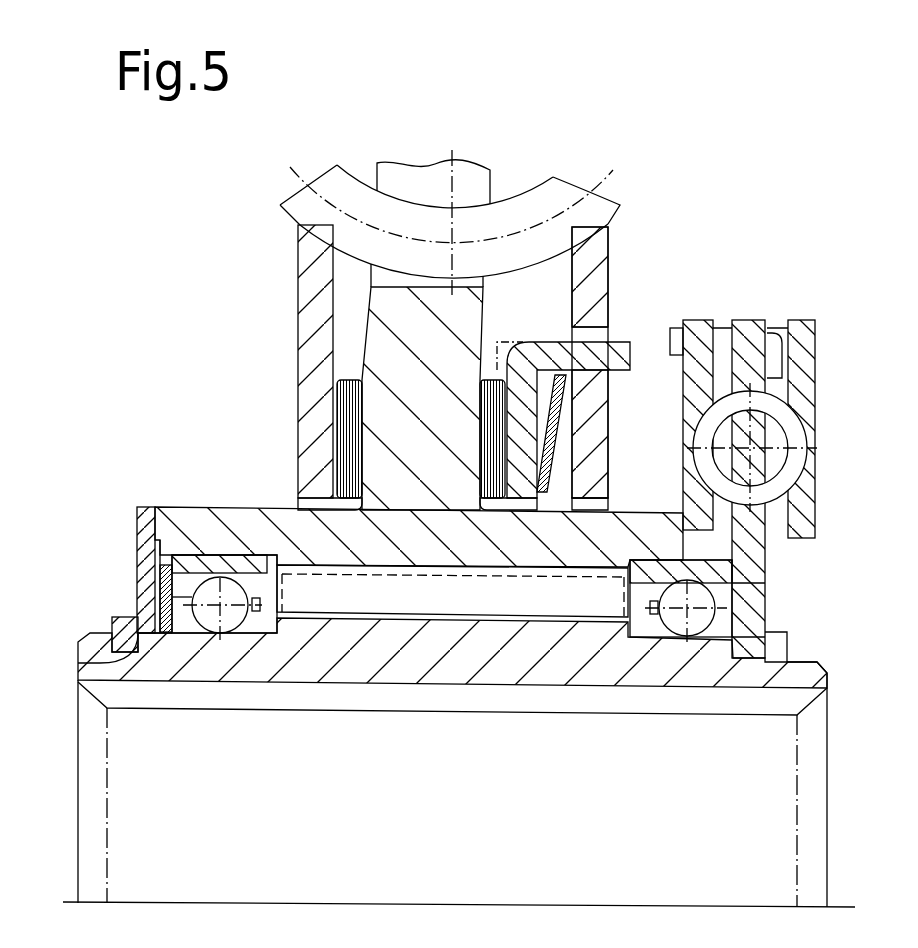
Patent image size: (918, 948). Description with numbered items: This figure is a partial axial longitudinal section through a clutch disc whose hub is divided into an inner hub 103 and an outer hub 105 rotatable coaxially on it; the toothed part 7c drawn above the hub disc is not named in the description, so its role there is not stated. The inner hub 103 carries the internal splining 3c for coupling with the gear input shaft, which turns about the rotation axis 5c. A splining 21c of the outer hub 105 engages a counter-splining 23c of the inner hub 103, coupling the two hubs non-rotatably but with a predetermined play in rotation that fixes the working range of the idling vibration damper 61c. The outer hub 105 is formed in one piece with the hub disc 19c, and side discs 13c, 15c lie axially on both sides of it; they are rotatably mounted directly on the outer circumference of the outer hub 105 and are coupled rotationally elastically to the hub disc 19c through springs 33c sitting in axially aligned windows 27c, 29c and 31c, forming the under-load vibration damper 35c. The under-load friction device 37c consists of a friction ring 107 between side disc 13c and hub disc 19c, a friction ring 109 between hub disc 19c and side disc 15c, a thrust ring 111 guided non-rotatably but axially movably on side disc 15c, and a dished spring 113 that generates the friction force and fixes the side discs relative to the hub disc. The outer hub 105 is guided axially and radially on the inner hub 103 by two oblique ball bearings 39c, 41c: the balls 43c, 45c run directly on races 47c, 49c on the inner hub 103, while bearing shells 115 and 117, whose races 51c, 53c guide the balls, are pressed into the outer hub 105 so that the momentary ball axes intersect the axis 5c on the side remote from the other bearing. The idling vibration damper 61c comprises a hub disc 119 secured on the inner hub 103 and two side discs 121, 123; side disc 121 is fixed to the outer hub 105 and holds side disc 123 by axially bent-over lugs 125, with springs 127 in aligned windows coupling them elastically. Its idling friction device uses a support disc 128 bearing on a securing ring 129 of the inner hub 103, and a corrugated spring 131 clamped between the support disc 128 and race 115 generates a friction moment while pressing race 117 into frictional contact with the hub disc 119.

The internal splining 3c is at (428, 750).
The rotation axis 5c is at (843, 906).
The gear 7c is at (396, 193).
The side disc 13c is at (310, 255).
The side disc 15c is at (600, 248).
The hub disc 19c is at (385, 323).
The splining 21c is at (566, 600).
The counter-splining 23c is at (517, 621).
The window 27c is at (300, 229).
The window 29c is at (607, 218).
The window 31c is at (485, 188).
The springs 33c is at (303, 200).
The under-load vibration damper 35c is at (208, 188).
The under-load friction device 37c is at (440, 360).
The oblique ball bearing 39c is at (164, 647).
The oblique ball bearing 41c is at (754, 665).
The balls 43c is at (237, 618).
The balls 45c is at (697, 630).
The race 47c is at (190, 636).
The race 49c is at (672, 640).
The race 51c is at (168, 547).
The race 53c is at (740, 592).
The idling vibration damper 61c is at (779, 459).
The inner hub 103 is at (176, 672).
The outer hub 105 is at (290, 522).
The friction ring 107 is at (340, 398).
The friction ring 109 is at (482, 403).
The thrust ring 111 is at (525, 398).
The dished spring 113 is at (546, 470).
The bearing shell 115 is at (210, 557).
The bearing shell 117 is at (727, 571).
The hub disc 119 is at (786, 644).
The side disc 121 is at (700, 320).
The side disc 123 is at (810, 345).
The bent-over lugs 125 is at (777, 333).
The springs 127 is at (792, 457).
The support disc 128 is at (140, 524).
The securing ring 129 is at (111, 632).
The corrugated spring 131 is at (94, 668).